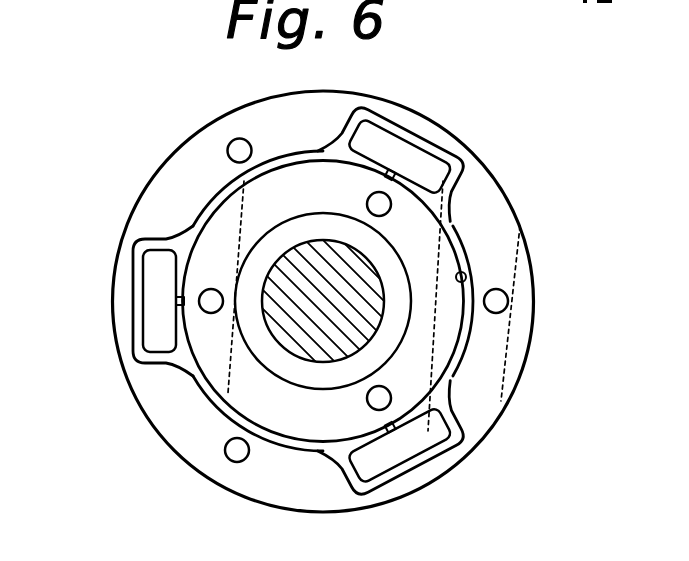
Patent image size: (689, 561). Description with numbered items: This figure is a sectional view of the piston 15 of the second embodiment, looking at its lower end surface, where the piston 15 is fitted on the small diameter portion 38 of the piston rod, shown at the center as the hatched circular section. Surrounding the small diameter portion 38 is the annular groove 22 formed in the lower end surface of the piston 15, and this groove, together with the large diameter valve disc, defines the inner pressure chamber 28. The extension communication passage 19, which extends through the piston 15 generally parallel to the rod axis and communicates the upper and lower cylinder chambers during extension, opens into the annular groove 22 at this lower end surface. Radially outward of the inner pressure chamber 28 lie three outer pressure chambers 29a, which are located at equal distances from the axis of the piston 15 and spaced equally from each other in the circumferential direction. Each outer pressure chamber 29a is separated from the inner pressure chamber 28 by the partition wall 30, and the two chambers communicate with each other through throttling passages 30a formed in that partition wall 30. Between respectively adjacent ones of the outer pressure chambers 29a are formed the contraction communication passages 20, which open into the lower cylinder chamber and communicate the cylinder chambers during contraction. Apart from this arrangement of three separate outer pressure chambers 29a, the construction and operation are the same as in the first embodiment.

The piston 15 is at (515, 221).
The extension communication passage 19 is at (392, 207).
The contraction communication passage 20 is at (232, 152).
The annular groove 22 is at (467, 280).
The inner pressure chamber 28 is at (450, 328).
The outer pressure chambers 29a is at (428, 160).
The partition wall 30 is at (452, 160).
The throttling passages 30a is at (400, 170).
The small diameter portion 38 is at (368, 330).